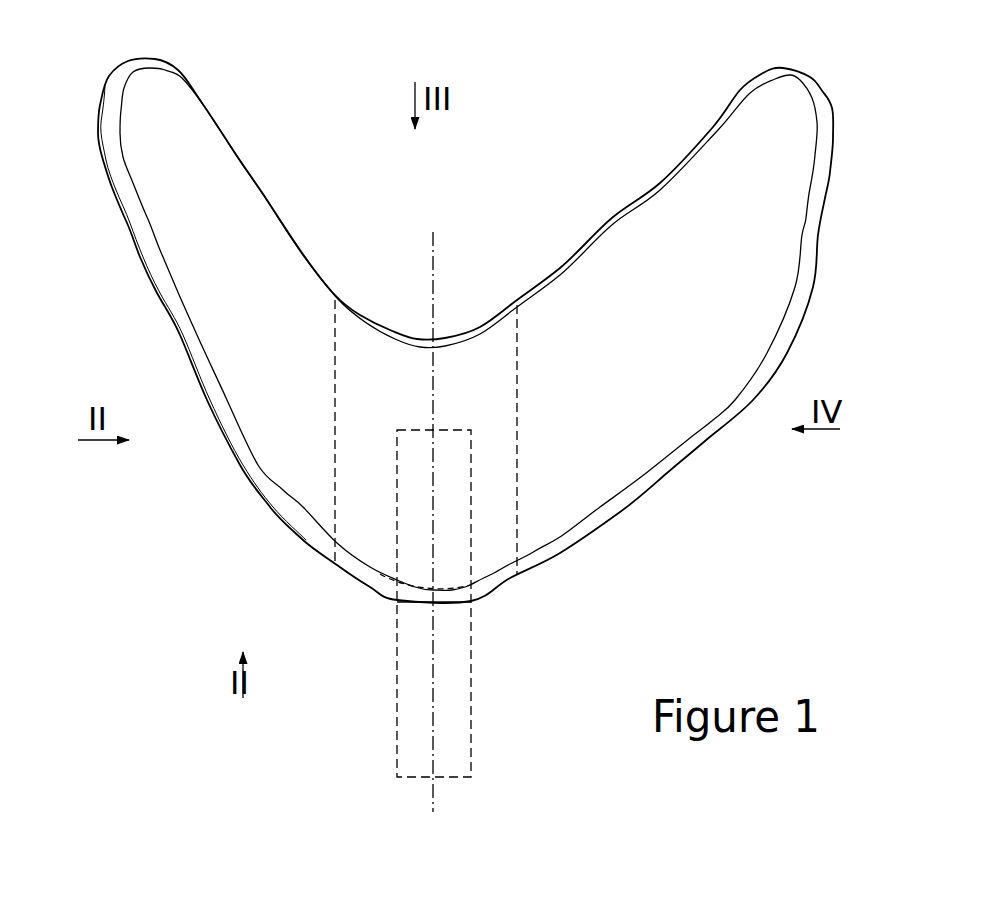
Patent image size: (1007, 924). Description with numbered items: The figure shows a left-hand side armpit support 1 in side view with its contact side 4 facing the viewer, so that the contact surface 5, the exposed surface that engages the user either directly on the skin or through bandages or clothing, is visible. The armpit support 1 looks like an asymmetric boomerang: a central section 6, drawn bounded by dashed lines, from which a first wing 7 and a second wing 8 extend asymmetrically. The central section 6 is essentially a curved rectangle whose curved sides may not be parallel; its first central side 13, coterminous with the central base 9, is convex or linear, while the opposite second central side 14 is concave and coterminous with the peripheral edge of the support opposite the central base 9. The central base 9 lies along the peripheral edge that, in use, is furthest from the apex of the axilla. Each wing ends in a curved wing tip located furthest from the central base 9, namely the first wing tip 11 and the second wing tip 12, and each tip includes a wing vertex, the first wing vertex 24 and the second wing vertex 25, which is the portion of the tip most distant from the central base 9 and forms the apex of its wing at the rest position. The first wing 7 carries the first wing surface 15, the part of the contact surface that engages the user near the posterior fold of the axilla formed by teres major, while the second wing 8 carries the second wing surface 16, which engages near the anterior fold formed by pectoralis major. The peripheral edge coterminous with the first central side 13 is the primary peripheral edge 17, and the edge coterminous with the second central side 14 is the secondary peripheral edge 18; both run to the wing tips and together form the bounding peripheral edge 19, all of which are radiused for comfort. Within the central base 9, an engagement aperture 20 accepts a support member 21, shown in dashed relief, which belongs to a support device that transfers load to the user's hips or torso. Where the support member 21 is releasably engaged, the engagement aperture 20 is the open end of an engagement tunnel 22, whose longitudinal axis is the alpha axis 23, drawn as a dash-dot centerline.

The armpit support 1 is at (232, 538).
The contact side 4 is at (619, 462).
The contact surface 5 is at (660, 413).
The central section 6 is at (494, 513).
The first wing 7 is at (119, 305).
The second wing 8 is at (826, 291).
The central base 9 is at (482, 611).
The first wing tip 11 is at (119, 62).
The second wing tip 12 is at (823, 74).
The first central side 13 is at (428, 601).
The second central side 14 is at (418, 331).
The first wing surface 15 is at (229, 230).
The second wing surface 16 is at (703, 203).
The primary peripheral edge 17 is at (601, 540).
The secondary peripheral edge 18 is at (606, 213).
The bounding peripheral edge 19 is at (199, 73).
The engagement aperture 20 is at (398, 601).
The support member 21 is at (393, 765).
The engagement tunnel 22 is at (472, 566).
The alpha axis 23 is at (438, 736).
The first wing vertex 24 is at (158, 57).
The second wing vertex 25 is at (797, 68).